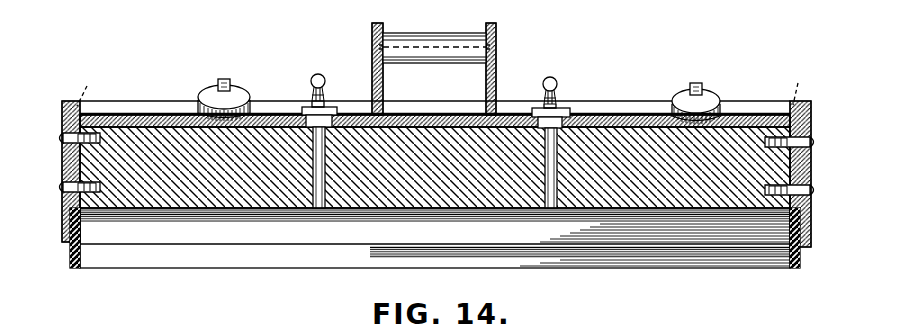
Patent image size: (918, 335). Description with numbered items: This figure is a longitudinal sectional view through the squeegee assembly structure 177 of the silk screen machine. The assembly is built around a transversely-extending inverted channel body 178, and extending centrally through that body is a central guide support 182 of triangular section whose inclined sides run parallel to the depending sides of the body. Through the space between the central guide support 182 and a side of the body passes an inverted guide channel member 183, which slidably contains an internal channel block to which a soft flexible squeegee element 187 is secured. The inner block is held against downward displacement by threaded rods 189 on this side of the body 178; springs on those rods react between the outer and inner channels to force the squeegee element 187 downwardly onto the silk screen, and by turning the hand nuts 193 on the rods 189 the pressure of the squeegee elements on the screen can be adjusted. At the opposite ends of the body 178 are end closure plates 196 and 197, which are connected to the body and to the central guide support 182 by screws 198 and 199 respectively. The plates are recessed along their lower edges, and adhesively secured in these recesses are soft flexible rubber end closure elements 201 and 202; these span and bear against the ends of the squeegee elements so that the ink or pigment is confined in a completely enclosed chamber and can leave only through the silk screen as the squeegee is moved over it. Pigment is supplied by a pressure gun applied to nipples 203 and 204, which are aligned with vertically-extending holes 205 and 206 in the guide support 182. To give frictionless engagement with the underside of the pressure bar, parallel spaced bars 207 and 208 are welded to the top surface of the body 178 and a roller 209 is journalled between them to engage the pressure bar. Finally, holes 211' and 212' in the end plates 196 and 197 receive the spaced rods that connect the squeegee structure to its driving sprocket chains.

The squeegee assembly structure 177 is at (594, 102).
The inverted channel body 178 is at (150, 95).
The central guide support 182 is at (241, 208).
The inverted guide channel member 183 is at (188, 228).
The squeegee element 187 is at (139, 262).
The threaded rod 189 is at (225, 80).
The hand nut 193 is at (205, 90).
The end closure plate 196 is at (69, 99).
The end closure plate 197 is at (792, 100).
The screw 198 is at (58, 187).
The screw 199 is at (817, 190).
The rubber end closure element 201 is at (73, 258).
The rubber end closure element 202 is at (798, 268).
The nipple 203 is at (330, 58).
The nipple 204 is at (562, 63).
The vertically-extending hole 205 is at (318, 212).
The vertically-extending hole 206 is at (552, 212).
The spaced bar 207 is at (372, 34).
The spaced bar 208 is at (497, 38).
The roller 209 is at (421, 41).
The hole 211' is at (102, 84).
The hole 212' is at (813, 80).